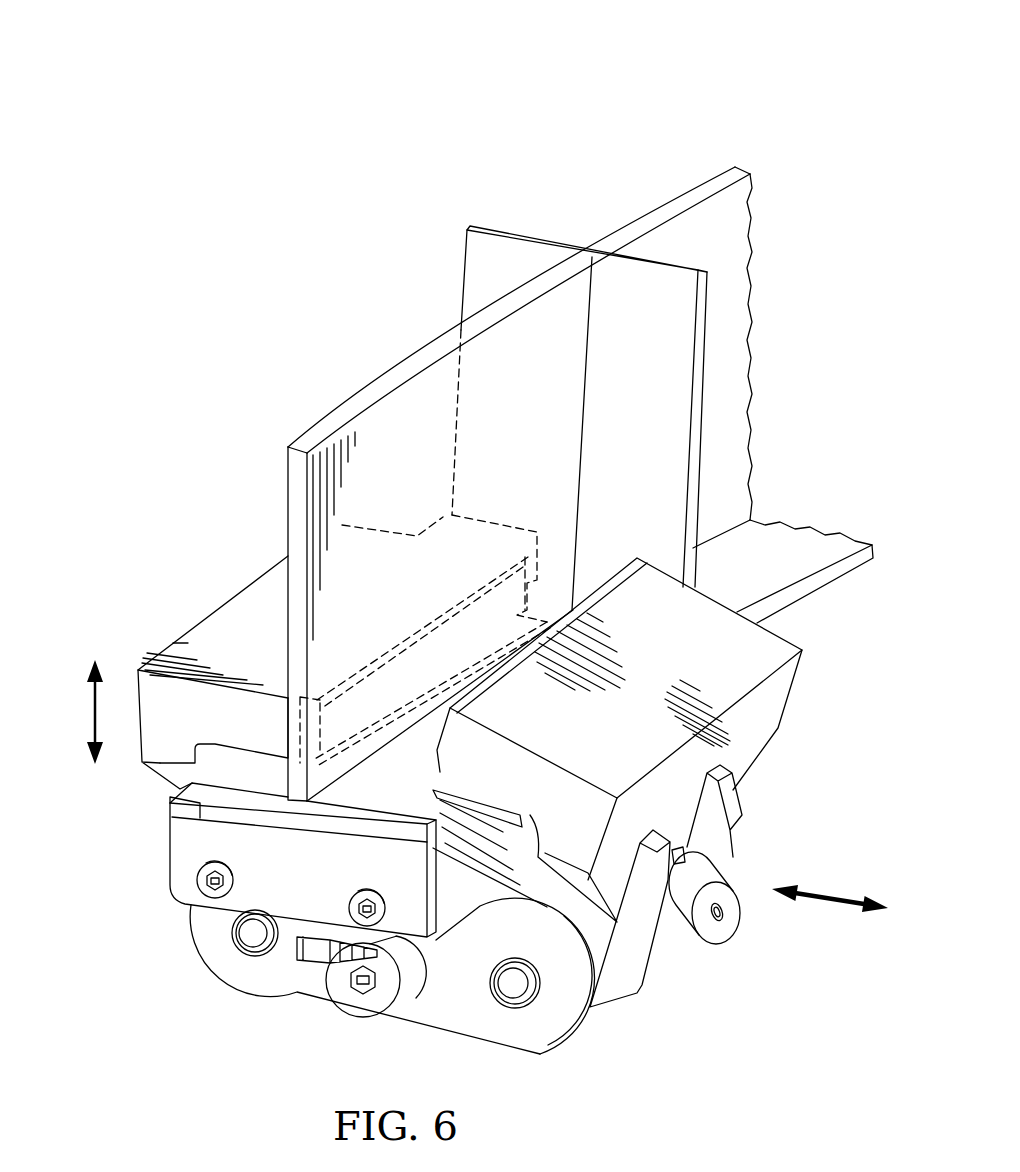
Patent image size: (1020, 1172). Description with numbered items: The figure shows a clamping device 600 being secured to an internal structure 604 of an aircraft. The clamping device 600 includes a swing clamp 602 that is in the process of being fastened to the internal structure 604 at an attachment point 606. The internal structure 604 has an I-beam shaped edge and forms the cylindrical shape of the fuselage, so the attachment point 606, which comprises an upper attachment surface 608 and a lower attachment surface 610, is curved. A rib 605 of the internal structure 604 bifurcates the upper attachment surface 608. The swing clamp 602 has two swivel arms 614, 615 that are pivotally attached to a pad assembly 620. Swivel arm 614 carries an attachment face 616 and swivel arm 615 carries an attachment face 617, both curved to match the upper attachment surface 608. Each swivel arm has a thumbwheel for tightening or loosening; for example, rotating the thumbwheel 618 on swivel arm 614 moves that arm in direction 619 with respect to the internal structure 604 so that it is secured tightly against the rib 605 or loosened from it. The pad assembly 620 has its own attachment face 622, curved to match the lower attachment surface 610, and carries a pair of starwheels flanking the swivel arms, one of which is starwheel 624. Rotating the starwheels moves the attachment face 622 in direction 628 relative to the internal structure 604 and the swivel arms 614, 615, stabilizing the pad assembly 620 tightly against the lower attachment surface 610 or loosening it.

The clamping device 600 is at (261, 80).
The swing clamp 602 is at (880, 597).
The internal structure 604 is at (712, 304).
The rib 605 is at (632, 219).
The attachment point 606 is at (413, 617).
The upper attachment surface 608 is at (418, 801).
The lower attachment surface 610 is at (297, 818).
The swivel arm 614 is at (791, 689).
The swivel arm 615 is at (228, 612).
The attachment face 616 is at (445, 868).
The attachment face 617 is at (186, 838).
The thumbwheel 618 is at (722, 944).
The direction 619 is at (832, 894).
The pad assembly 620 is at (388, 1020).
The attachment face 622 is at (180, 794).
The starwheel 624 is at (305, 967).
The direction 628 is at (90, 708).